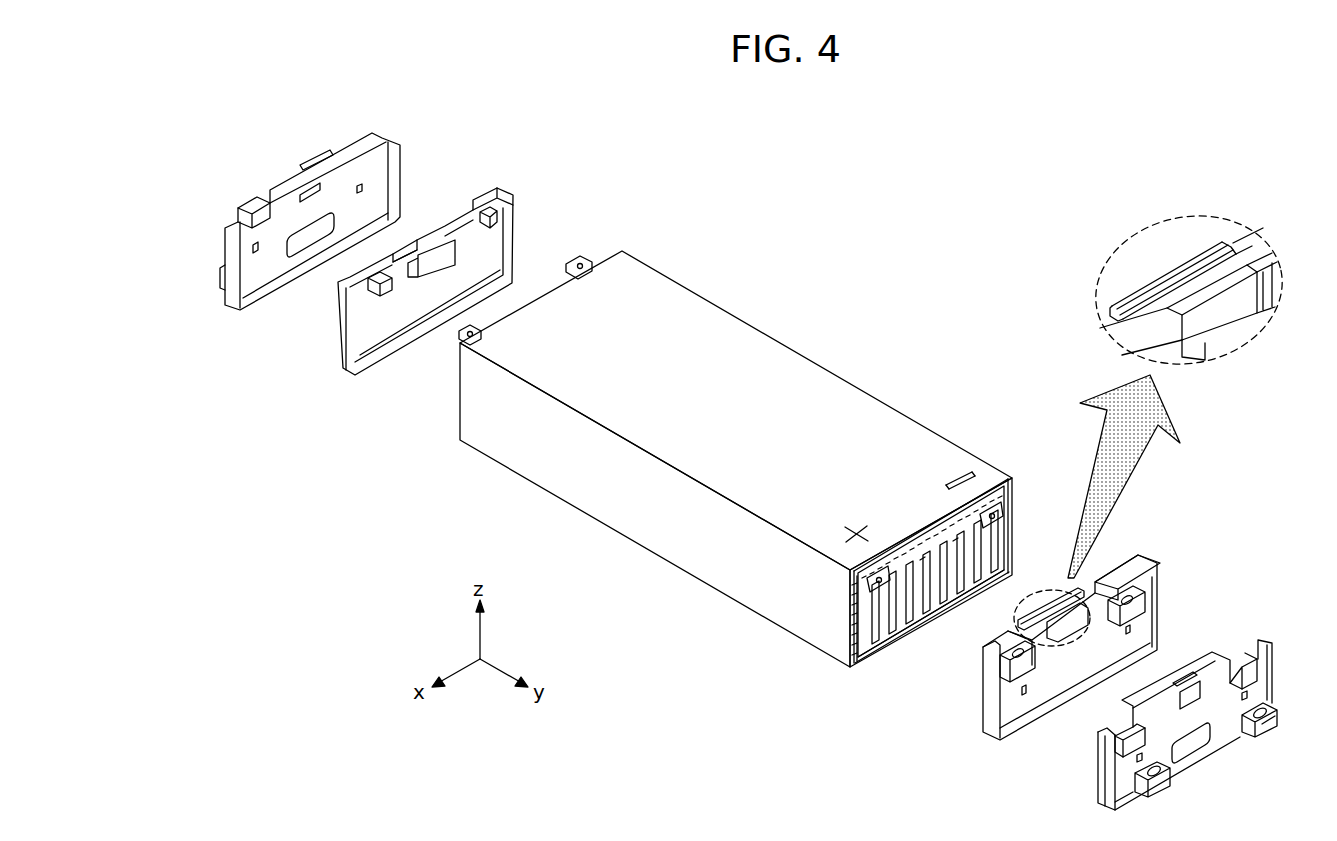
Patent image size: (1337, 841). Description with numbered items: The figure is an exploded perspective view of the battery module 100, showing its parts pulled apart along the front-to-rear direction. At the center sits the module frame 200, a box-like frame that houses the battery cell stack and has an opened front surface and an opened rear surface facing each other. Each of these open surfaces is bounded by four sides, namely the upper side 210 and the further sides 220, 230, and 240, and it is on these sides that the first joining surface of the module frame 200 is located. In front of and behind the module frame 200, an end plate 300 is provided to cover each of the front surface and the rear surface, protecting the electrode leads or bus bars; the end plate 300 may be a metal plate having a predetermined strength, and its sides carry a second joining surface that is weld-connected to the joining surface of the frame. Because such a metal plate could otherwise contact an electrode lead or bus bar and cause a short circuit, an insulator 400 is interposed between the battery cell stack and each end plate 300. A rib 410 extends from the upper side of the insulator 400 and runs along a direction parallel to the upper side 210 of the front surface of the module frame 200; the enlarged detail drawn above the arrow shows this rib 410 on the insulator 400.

The battery module 100 is at (786, 217).
The module frame 200 is at (793, 365).
The upper side 210 is at (920, 525).
The side of module frame 220 is at (1009, 502).
The side of module frame 230 is at (848, 615).
The side of module frame 240 is at (905, 637).
The end plate 300 is at (290, 183).
The insulator 400 is at (497, 193).
The rib 410 is at (1050, 600).